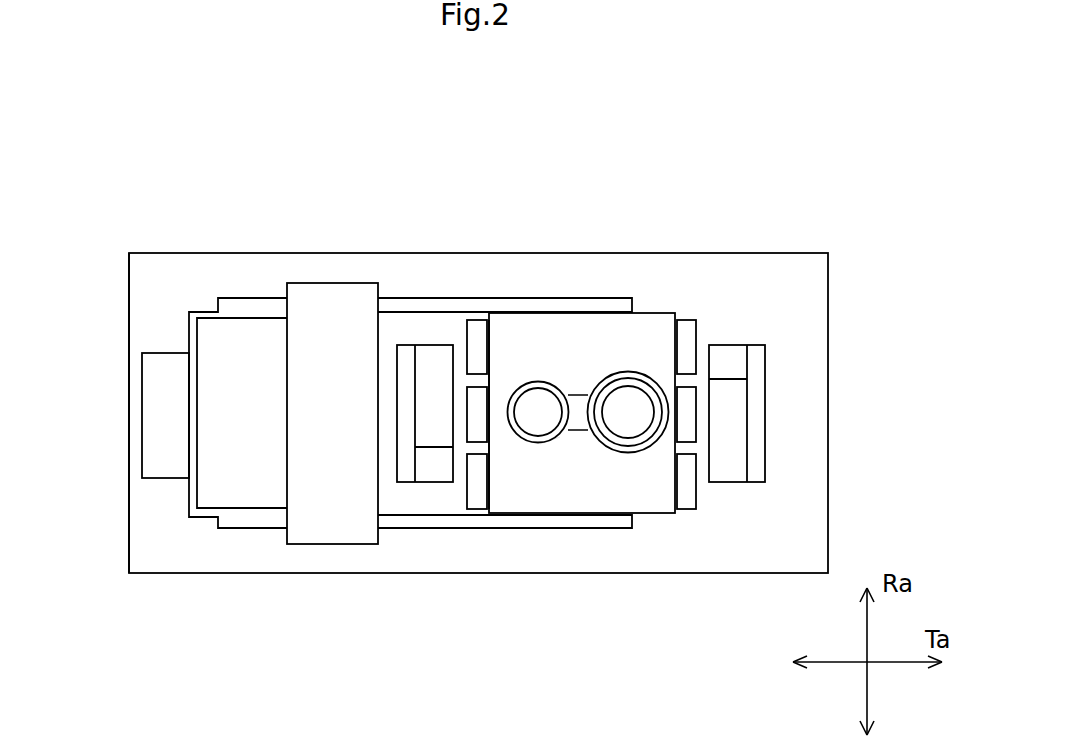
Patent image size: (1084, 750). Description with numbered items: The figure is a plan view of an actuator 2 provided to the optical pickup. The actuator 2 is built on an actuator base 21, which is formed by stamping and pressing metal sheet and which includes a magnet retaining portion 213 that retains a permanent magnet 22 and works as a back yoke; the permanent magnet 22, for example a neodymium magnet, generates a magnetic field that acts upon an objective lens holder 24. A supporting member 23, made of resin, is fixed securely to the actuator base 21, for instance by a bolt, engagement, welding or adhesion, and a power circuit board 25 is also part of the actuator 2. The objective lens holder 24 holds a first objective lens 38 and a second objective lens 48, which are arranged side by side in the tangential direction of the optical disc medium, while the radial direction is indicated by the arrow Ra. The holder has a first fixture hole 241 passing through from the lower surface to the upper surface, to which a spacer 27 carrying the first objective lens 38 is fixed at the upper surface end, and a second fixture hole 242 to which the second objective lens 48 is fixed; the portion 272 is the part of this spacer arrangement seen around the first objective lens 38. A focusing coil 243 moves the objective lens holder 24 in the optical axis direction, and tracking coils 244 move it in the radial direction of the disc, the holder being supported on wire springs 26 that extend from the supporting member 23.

The actuator 2 is at (138, 230).
The actuator base 21 is at (155, 295).
The permanent magnet 22 is at (428, 370).
The supporting member 23 is at (262, 444).
The objective lens holder 24 is at (586, 337).
The power circuit board 25 is at (193, 382).
The wire springs 26 is at (510, 305).
The spacer 27 is at (648, 378).
The first objective lens 38 is at (628, 410).
The second objective lens 48 is at (538, 398).
The magnet retaining portion 213 is at (406, 447).
The first fixture hole 241 is at (637, 447).
The second fixture hole 242 is at (560, 437).
The focusing coil 243 is at (482, 407).
The tracking coil 244 is at (472, 345).
The bearing inner ring 272 is at (601, 410).